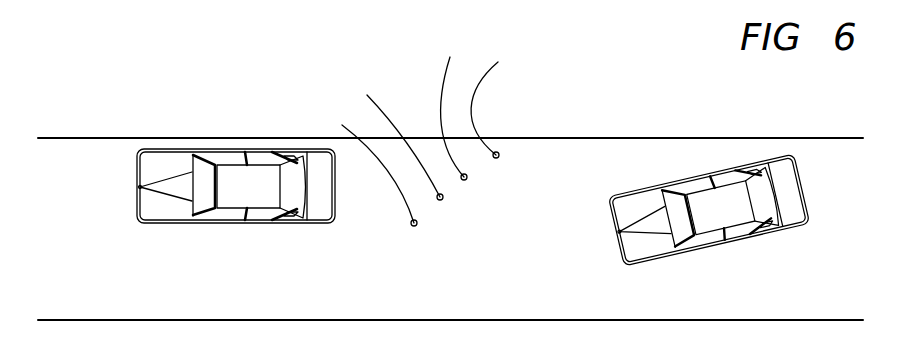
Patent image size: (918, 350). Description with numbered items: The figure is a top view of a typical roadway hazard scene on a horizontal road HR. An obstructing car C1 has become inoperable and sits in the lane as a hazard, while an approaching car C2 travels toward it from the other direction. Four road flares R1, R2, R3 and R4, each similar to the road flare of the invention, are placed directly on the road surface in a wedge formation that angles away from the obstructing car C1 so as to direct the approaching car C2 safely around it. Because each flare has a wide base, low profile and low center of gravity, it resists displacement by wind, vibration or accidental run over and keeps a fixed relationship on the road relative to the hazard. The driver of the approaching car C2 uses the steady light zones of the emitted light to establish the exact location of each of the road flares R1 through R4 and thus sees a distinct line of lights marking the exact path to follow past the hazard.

The horizontal road HR is at (590, 152).
The obstructing car C1 is at (788, 178).
The approaching car C2 is at (176, 165).
The road flare R1 is at (503, 97).
The road flare R2 is at (448, 103).
The road flare R3 is at (391, 136).
The road flare R4 is at (371, 167).